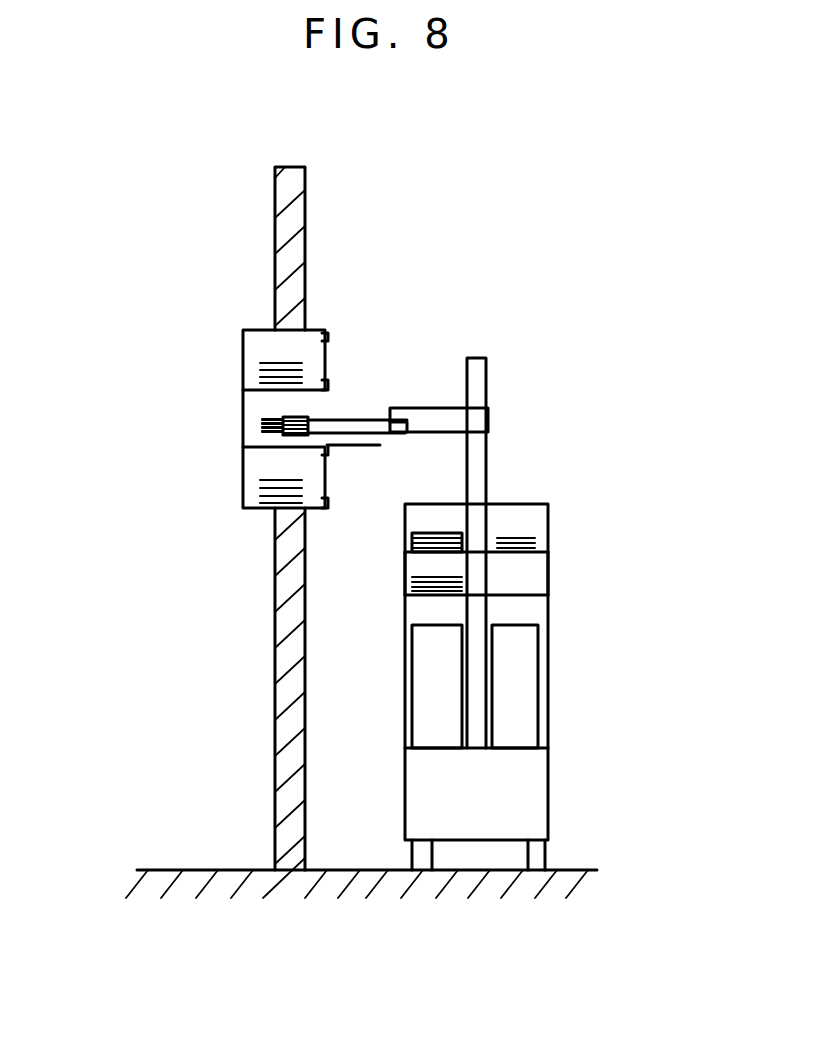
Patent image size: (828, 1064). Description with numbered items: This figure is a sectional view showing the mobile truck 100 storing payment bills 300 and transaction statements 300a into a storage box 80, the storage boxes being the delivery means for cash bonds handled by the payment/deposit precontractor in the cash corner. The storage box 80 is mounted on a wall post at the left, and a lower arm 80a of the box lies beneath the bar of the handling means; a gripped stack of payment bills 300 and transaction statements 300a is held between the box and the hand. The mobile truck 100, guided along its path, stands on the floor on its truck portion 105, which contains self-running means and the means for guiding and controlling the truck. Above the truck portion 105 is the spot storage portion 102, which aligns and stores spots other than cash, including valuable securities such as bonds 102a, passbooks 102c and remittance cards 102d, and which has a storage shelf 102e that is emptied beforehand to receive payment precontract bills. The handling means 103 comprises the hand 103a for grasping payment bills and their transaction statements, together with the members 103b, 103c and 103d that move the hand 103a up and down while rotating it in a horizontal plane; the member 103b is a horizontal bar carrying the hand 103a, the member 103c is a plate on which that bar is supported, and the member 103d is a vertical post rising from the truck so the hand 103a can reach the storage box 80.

The storage box 80 is at (243, 356).
The clamp arm 80a is at (355, 447).
The payment bills 300 is at (270, 448).
The transaction statement 300a is at (262, 422).
The handling means 103 is at (412, 408).
The hand 103a is at (298, 416).
The member 103b is at (385, 420).
The member 103c is at (447, 408).
The member 103d is at (487, 374).
The mobile truck 100 is at (549, 683).
The spot storage portion 102 is at (405, 526).
The bonds 102a is at (430, 578).
The passbooks 102c is at (437, 533).
The remittance cards 102d is at (518, 538).
The storage shelf 102e is at (548, 580).
The truck portion 105 is at (485, 823).